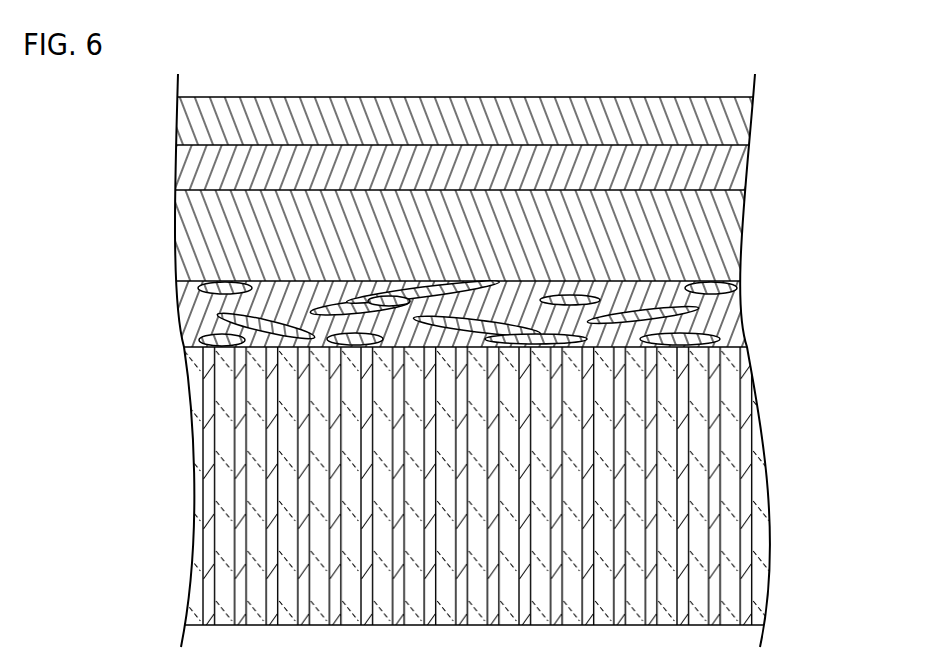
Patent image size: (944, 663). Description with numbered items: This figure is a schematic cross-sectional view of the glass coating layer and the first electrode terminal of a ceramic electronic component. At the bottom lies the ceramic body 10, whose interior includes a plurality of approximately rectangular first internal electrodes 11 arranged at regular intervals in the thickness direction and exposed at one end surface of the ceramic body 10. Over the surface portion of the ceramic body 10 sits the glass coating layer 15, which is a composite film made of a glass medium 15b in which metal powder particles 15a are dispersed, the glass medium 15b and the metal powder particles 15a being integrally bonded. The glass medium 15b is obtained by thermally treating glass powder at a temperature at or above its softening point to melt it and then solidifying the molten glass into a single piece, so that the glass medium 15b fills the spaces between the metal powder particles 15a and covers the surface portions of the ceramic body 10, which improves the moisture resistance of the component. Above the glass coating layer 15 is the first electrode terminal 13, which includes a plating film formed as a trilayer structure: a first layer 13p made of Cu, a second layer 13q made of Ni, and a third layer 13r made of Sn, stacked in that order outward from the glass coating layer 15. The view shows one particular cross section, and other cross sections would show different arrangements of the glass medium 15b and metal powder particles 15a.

The ceramic body 10 is at (770, 491).
The first internal electrodes 11 is at (752, 440).
The first electrode terminal 13 is at (396, 189).
The first layer 13p is at (425, 235).
The second layer 13q is at (175, 162).
The third layer 13r is at (175, 119).
The glass coating layer 15 is at (451, 327).
The metal powder particles 15a is at (216, 316).
The glass medium 15b is at (745, 315).